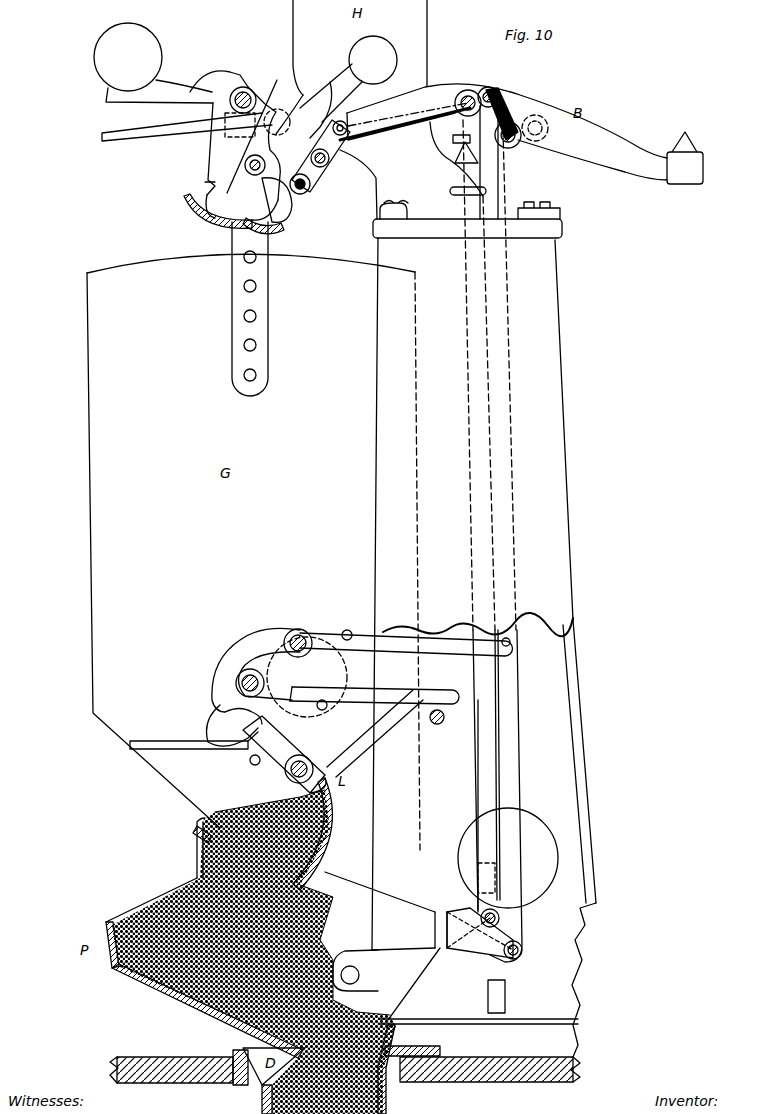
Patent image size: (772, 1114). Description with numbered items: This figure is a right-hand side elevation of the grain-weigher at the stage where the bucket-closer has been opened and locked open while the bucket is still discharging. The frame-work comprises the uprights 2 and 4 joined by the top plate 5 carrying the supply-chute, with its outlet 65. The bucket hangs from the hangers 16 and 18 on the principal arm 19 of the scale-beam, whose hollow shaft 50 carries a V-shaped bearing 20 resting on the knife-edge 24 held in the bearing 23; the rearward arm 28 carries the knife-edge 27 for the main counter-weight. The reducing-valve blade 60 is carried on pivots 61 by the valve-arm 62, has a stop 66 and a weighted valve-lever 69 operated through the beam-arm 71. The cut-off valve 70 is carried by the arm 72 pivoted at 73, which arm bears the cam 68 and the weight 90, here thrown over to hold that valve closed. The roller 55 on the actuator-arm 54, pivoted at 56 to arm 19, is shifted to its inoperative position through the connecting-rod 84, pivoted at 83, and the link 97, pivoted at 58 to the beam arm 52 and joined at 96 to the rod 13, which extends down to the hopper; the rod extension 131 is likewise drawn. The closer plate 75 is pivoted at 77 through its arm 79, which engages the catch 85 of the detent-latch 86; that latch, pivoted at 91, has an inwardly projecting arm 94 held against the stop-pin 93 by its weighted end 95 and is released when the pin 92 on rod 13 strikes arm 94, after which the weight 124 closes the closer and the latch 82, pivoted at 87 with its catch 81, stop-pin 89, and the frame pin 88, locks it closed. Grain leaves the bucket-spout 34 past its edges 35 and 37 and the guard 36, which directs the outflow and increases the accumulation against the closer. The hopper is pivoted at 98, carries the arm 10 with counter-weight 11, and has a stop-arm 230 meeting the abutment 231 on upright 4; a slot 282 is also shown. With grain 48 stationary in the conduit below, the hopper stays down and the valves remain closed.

The side frame or upright 2 is at (558, 483).
The side frame or upright 4 is at (556, 671).
The top plate 5 is at (552, 228).
The arm 10 is at (465, 895).
The counter-weight 11 is at (546, 868).
The rod 13 is at (499, 184).
The rod extension 131 is at (487, 768).
The hanger 16 is at (258, 298).
The hanger 18 is at (213, 78).
The principal arm 19 is at (507, 121).
The V-shaped bearing 20 is at (456, 159).
The bearing 23 is at (470, 178).
The pivot or knife-edge 24 is at (465, 150).
The pivot or knife-edge 27 is at (694, 150).
The arm 28 is at (624, 150).
The bucket-spout 34 is at (210, 803).
The spout edge 35 is at (205, 836).
The guard 36 is at (197, 862).
The spout edge 37 is at (302, 808).
The grain 48 is at (386, 1048).
The hollow shaft 50 is at (457, 96).
The arm 52 is at (510, 115).
The actuator-arm 54 is at (290, 165).
The roller 55 is at (340, 121).
The pivot 56 is at (306, 192).
The pivot 58 is at (512, 148).
The valve-blade 60 is at (215, 216).
The pivot 61 is at (248, 90).
The valve-arm 62 is at (208, 155).
The outlet 65 is at (240, 200).
The stop 66 is at (205, 184).
The cut-off-valve cam 68 is at (300, 115).
The valve-lever 69 is at (165, 82).
The cut-off valve 70 is at (268, 226).
The beam-arm 71 is at (141, 134).
The arm 72 is at (331, 84).
The pivot 73 is at (262, 152).
The closer plate 75 is at (328, 818).
The pivot 77 is at (290, 784).
The arm 79 is at (262, 745).
The catch 81 is at (292, 698).
The latch 82 is at (318, 692).
The pivot 83 is at (325, 165).
The connecting-rod 84 is at (412, 146).
The catch 85 is at (226, 710).
The detent-latch 86 is at (229, 662).
The pivot 87 is at (258, 690).
The pin 88 is at (438, 725).
The stop-pin 89 is at (326, 709).
The weight 90 is at (373, 60).
The pivot 91 is at (298, 629).
The pin 92 is at (511, 642).
The stop-pin 93 is at (347, 630).
The arm 94 is at (394, 640).
The weighted end 95 is at (210, 724).
The pivot 96 is at (490, 88).
The link 97 is at (516, 122).
The pivot 98 is at (360, 976).
The weight 124 is at (347, 671).
The stop-arm 230 is at (503, 953).
The stop or abutment 231 is at (496, 878).
The slot 282 is at (500, 998).